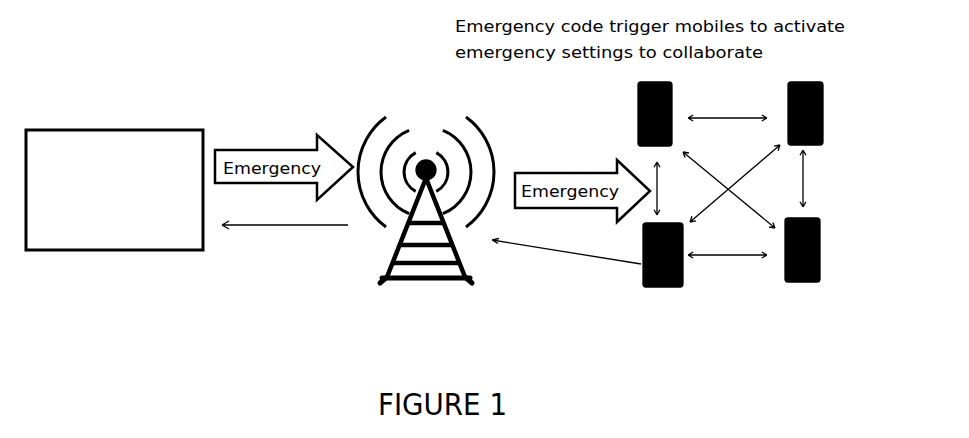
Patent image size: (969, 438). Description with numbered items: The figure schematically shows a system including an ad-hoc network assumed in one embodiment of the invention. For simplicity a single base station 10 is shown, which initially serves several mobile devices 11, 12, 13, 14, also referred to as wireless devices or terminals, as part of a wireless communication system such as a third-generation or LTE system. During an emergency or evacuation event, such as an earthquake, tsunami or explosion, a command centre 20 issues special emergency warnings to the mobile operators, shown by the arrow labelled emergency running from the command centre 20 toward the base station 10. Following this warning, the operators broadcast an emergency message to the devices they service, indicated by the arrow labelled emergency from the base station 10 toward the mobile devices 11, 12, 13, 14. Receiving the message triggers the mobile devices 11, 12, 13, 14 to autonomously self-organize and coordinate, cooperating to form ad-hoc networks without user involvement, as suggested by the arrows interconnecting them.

The base station 10 is at (426, 213).
The mobile device 11 is at (639, 113).
The mobile device 12 is at (821, 113).
The mobile device 13 is at (657, 266).
The mobile device 14 is at (808, 264).
The command centre 20 is at (114, 177).